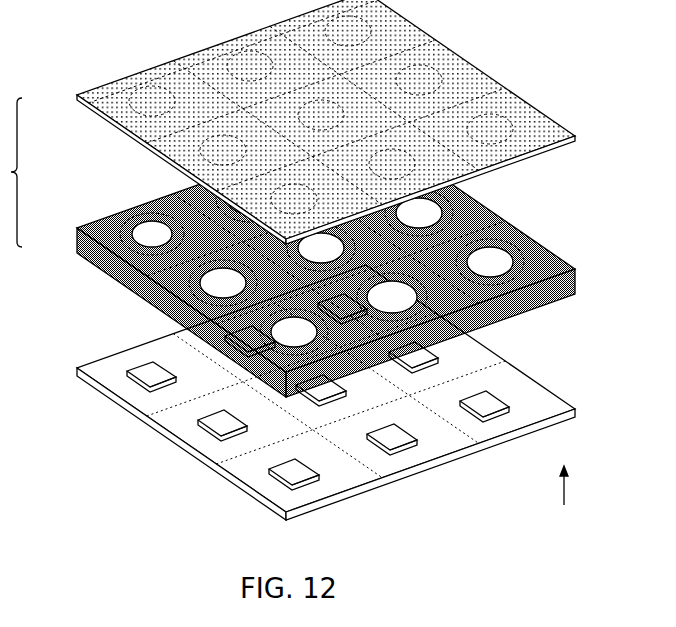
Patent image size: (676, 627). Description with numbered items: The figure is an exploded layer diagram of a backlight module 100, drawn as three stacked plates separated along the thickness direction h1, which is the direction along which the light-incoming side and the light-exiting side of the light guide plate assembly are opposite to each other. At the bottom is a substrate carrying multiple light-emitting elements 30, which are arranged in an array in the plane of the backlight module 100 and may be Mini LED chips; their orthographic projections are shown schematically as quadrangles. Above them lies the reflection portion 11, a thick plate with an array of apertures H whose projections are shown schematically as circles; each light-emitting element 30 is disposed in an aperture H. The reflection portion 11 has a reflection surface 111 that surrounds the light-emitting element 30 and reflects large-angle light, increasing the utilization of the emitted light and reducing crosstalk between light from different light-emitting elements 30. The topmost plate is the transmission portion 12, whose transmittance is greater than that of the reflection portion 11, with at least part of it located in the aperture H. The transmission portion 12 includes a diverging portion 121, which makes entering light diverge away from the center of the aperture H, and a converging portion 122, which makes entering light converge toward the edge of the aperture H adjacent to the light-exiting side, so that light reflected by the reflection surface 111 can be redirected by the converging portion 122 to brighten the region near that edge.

The backlight module 100 is at (561, 11).
The transmission portion 12 is at (300, 122).
The diverging portion 121 is at (148, 83).
The converging portion 122 is at (205, 60).
The reflection portion 11 is at (302, 261).
The aperture H is at (145, 240).
The reflection surface 111 is at (160, 301).
The light-emitting element 30 is at (143, 378).
The thickness direction h1 is at (553, 485).